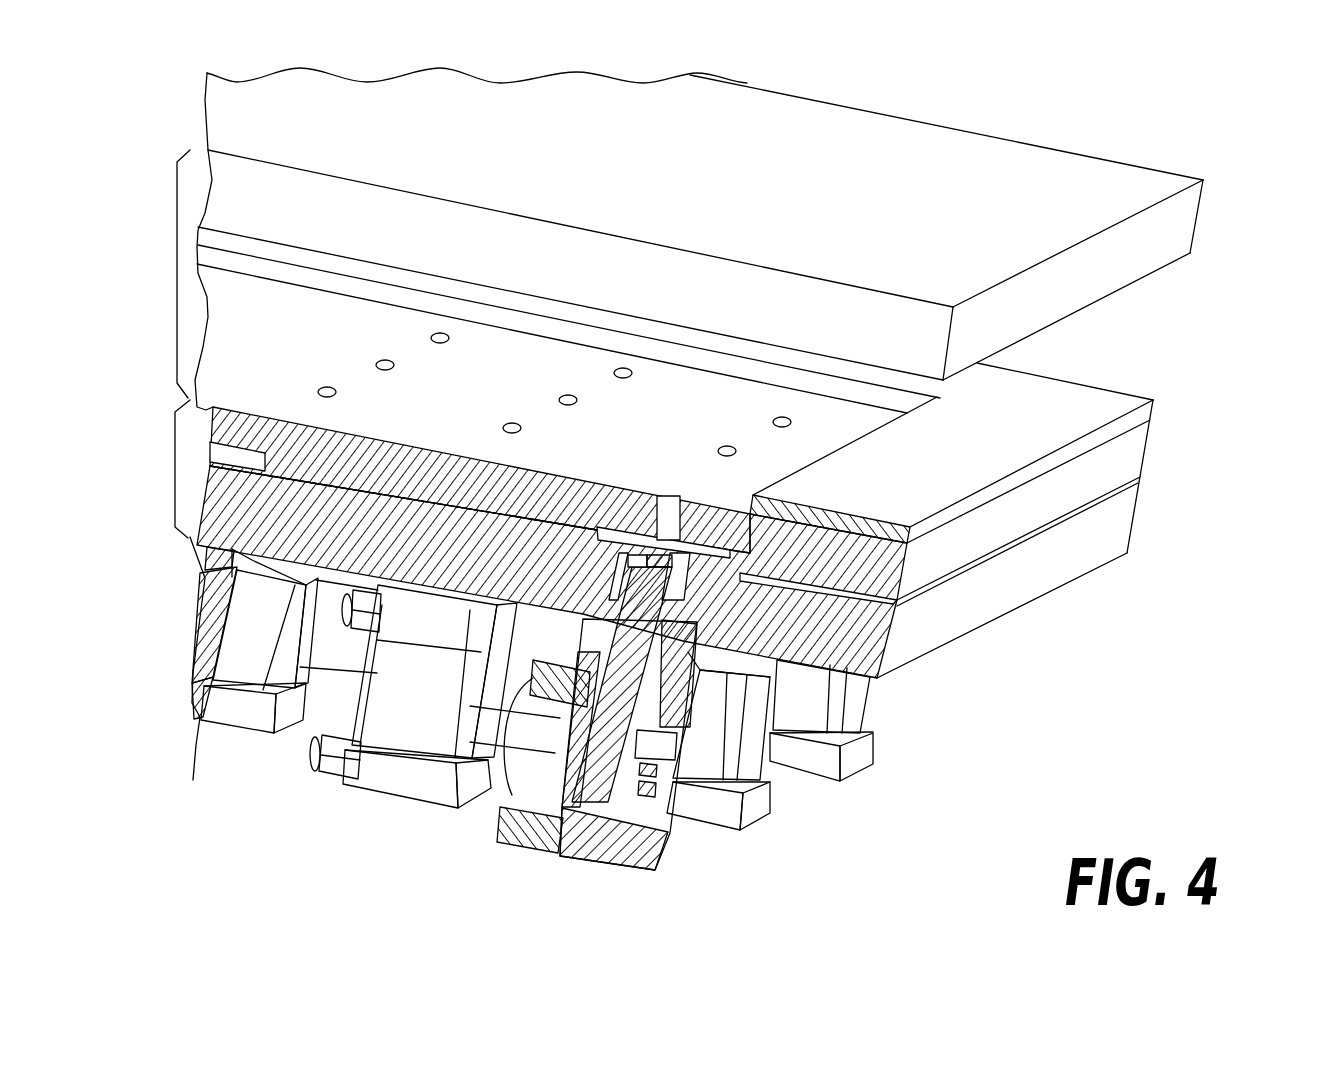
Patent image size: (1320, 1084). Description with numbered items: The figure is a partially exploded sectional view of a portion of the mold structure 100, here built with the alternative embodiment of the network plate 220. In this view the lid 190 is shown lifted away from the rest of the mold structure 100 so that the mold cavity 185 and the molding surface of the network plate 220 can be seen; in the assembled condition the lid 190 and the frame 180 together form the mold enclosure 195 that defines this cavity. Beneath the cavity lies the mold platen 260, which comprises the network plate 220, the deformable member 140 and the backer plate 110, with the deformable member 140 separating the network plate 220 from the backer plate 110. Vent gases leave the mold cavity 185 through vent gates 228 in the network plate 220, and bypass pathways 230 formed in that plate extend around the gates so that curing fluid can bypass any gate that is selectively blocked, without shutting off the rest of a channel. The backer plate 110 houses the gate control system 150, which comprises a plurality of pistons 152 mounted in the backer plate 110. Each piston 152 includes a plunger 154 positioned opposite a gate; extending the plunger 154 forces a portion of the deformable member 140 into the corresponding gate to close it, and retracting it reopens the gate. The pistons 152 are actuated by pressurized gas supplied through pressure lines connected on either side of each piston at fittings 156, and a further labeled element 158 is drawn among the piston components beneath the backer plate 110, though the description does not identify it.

The mold structure 100 is at (1291, 129).
The lid 190 is at (1170, 230).
The mold enclosure 195 is at (177, 274).
The mold platen 260 is at (175, 466).
The mold cavity 185 is at (541, 376).
The vent gates 228 is at (727, 446).
The frame 180 is at (1148, 400).
The network plate 220 is at (1130, 457).
The deformable member 140 is at (863, 583).
The backer plate 110 is at (863, 653).
The bypass pathways 230 is at (747, 575).
The plunger 154 is at (627, 568).
The fittings 156 is at (503, 826).
The bracket 158 is at (687, 653).
The pistons 152 is at (357, 797).
The gate control system 150 is at (960, 780).